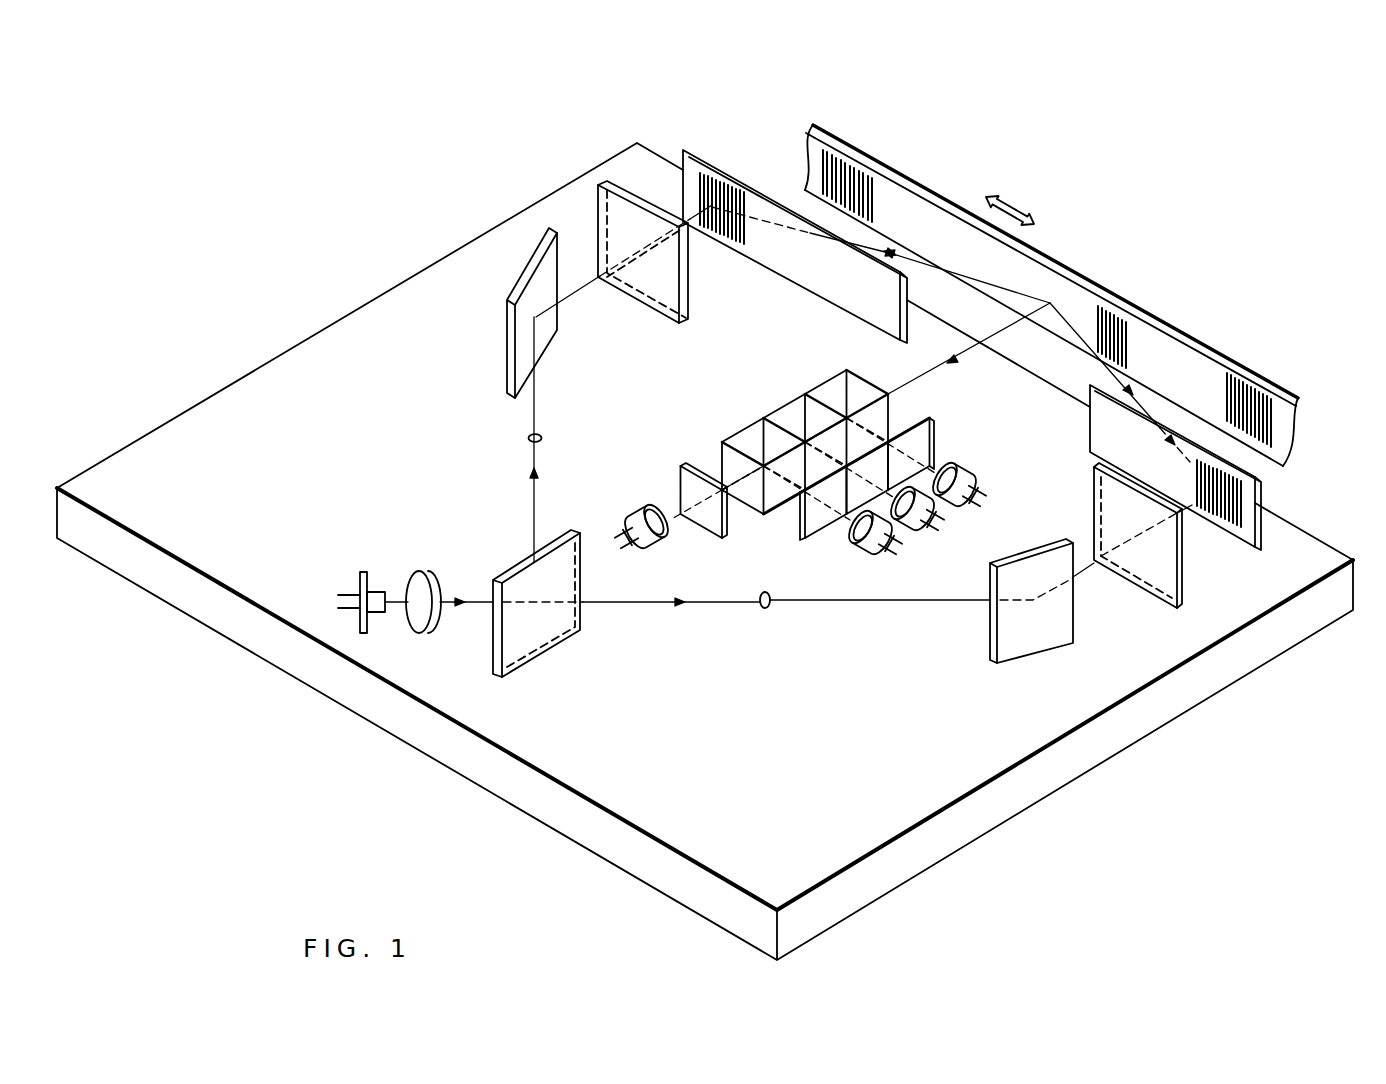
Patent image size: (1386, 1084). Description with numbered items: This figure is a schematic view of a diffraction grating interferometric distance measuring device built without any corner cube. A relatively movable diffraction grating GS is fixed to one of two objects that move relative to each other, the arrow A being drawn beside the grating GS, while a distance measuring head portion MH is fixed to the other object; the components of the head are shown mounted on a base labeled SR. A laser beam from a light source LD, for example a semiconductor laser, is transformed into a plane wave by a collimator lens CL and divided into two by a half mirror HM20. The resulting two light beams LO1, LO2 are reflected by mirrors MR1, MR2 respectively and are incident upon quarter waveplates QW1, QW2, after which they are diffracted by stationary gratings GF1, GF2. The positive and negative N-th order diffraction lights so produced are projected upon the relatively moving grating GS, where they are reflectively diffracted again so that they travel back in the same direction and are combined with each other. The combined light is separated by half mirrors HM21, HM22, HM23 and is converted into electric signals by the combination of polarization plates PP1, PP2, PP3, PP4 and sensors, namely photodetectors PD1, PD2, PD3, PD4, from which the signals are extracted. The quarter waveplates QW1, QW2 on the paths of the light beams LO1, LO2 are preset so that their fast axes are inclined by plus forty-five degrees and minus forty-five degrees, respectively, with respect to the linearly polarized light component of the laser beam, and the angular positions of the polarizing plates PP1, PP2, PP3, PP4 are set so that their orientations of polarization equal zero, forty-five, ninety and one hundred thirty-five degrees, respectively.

The light source LD is at (353, 572).
The collimator lens CL is at (427, 571).
The half mirror HM20 is at (548, 637).
The half mirror HM21 is at (835, 384).
The half mirror HM22 is at (793, 415).
The half mirror HM23 is at (750, 438).
The light beam LO1 is at (765, 609).
The light beam LO2 is at (528, 438).
The mirror MR1 is at (1042, 645).
The mirror MR2 is at (523, 348).
The quarter waveplate QW1 is at (1155, 583).
The quarter waveplate QW2 is at (620, 198).
The stationary grating GF1 is at (1240, 532).
The stationary grating GF2 is at (712, 175).
The relatively movable diffraction grating GS is at (1172, 340).
The direction of movement of grating scale A is at (1010, 200).
The polarization plate PP1 is at (918, 448).
The polarization plate PP2 is at (890, 422).
The polarization plate PP3 is at (812, 534).
The polarization plate PP4 is at (708, 528).
The sensor (photodetector) PD1 is at (962, 470).
The sensor (photodetector) PD2 is at (955, 524).
The sensor (photodetector) PD3 is at (884, 558).
The sensor (photodetector) PD4 is at (643, 515).
The distance measuring head portion MH is at (1216, 773).
The base plate (substrate) of measuring head SR is at (1030, 790).